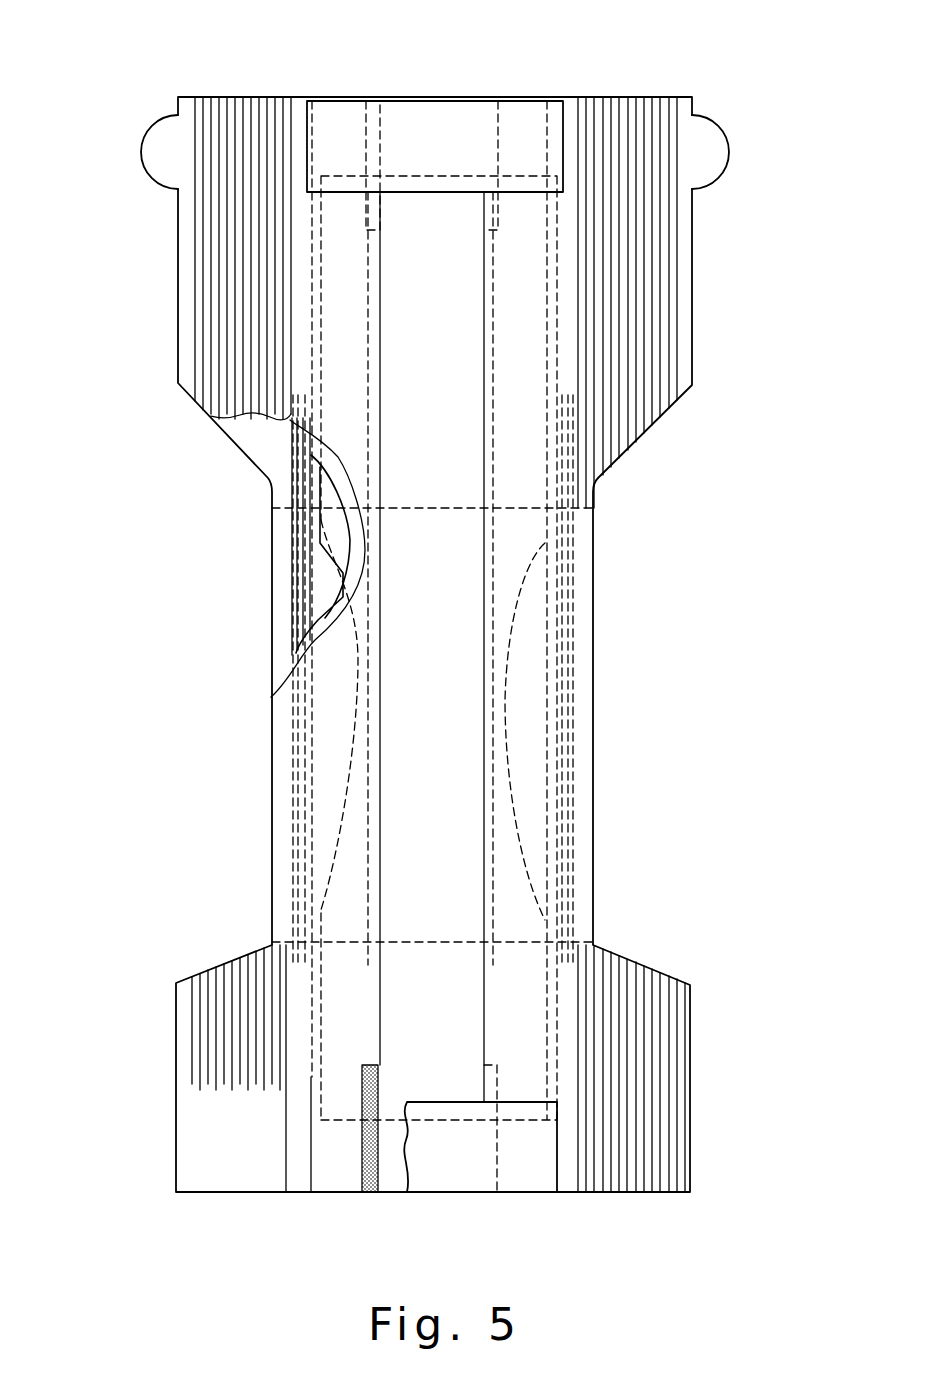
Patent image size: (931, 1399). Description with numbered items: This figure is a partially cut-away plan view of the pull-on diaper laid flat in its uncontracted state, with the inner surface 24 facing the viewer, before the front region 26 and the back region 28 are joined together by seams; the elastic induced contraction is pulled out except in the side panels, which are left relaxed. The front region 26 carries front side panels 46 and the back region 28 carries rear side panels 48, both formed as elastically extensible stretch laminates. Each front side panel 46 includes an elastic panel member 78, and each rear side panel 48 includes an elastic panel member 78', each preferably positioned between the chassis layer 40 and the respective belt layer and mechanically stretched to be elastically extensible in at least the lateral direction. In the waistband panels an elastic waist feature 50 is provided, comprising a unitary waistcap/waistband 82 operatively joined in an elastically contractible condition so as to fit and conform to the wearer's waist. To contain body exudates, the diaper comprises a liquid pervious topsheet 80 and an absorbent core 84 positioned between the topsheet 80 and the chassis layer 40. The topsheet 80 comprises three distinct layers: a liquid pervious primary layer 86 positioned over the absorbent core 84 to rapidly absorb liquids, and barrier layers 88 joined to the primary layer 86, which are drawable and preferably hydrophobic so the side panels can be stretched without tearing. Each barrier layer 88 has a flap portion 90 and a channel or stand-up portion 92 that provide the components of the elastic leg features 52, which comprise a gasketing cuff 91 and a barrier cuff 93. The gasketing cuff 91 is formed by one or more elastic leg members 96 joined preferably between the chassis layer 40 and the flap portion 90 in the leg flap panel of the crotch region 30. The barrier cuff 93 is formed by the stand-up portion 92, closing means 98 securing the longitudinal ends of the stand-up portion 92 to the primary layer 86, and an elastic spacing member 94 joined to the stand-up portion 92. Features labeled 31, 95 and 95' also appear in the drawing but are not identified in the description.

The inner surface 24 is at (416, 308).
The front region 26 is at (821, 958).
The back region 28 is at (821, 100).
The crotch region 30 is at (821, 524).
The ear flap 31 is at (140, 148).
The chassis layer 40 is at (310, 562).
The front side panel 46 is at (222, 990).
The rear side panel 48 is at (250, 118).
The elastic waist feature 50 is at (444, 1183).
The elastic leg features 52 is at (282, 788).
The elastic panel member 78 is at (258, 1068).
The elastic panel member 78' is at (251, 435).
The topsheet 80 is at (470, 629).
The unitary waistcap/waistband 82 is at (417, 150).
The absorbent core 84 is at (333, 528).
The primary layer 86 is at (417, 597).
The barrier layers 88 is at (320, 717).
The flap portion 90 is at (302, 703).
The gasketing cuff 91 is at (250, 658).
The stand-up portion 92 is at (333, 740).
The barrier cuff 93 is at (459, 762).
The elastic spacing member 94 is at (493, 652).
The outer line 95 is at (443, 720).
The inner boundary line 95' is at (437, 711).
The elastic leg members 96 is at (300, 627).
The closing means 98 is at (372, 118).